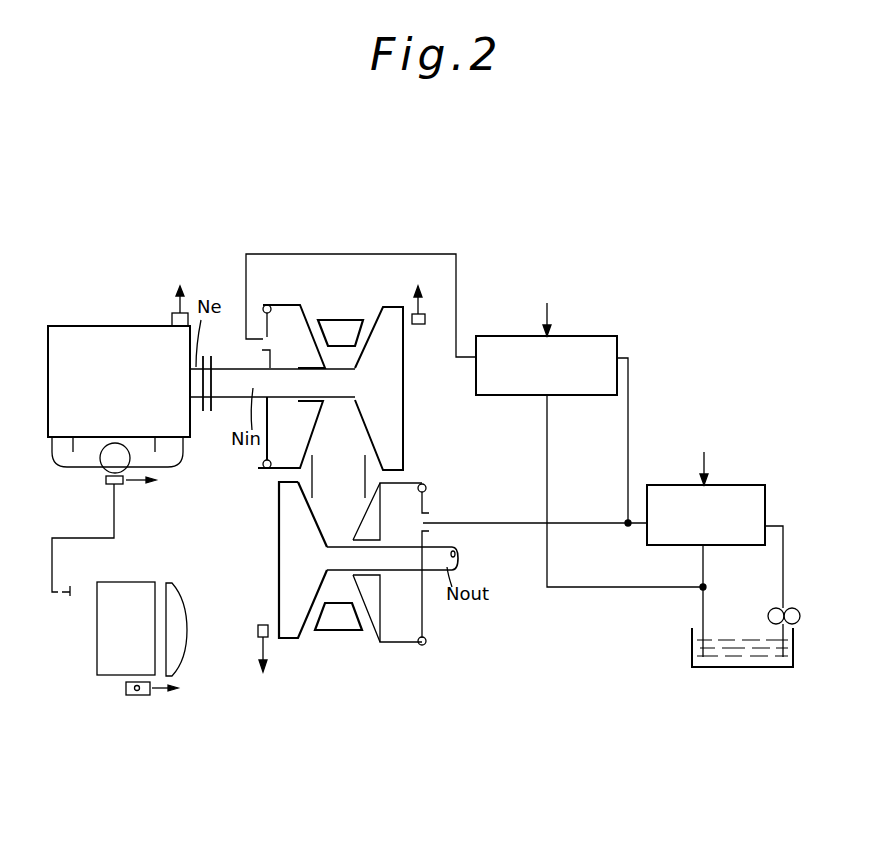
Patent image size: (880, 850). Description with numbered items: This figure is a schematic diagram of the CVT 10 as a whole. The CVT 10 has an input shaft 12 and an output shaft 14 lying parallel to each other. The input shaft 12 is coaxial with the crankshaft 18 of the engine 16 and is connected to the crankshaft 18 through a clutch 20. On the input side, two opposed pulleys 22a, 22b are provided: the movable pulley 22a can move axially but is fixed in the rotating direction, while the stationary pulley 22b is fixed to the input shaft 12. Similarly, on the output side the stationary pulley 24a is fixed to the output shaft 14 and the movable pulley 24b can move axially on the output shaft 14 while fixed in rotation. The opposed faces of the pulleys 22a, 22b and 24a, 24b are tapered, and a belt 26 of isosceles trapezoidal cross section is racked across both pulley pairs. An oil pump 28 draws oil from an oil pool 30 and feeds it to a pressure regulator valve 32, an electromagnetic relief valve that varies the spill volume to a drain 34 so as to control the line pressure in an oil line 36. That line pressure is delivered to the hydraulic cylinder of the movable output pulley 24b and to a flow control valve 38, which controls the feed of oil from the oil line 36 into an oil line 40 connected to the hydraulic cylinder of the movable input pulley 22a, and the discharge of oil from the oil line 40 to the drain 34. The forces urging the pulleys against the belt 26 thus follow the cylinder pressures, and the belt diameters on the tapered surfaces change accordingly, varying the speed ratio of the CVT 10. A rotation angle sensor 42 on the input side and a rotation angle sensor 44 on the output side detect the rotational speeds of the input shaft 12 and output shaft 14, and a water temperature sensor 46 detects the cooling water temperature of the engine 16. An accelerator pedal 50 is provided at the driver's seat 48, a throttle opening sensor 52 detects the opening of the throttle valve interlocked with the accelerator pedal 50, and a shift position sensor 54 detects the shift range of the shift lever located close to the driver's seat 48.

The CVT 10 is at (366, 284).
The input shaft 12 is at (229, 387).
The output shaft 14 is at (430, 567).
The engine 16 is at (93, 335).
The crankshaft 18 is at (201, 400).
The clutch 20 is at (212, 358).
The movable pulley on the input side 22a is at (286, 325).
The stationary pulley on the input side 22b is at (395, 440).
The stationary pulley on the output side 24a is at (288, 627).
The movable pulley on the output side 24b is at (393, 630).
The belt 26 is at (340, 330).
The oil pump 28 is at (770, 612).
The oil pool 30 is at (692, 660).
The pressure regulator valve 32 is at (748, 495).
The drain 34 is at (702, 611).
The oil line 36 is at (630, 455).
The flow control valve 38 is at (584, 337).
The oil line 40 is at (457, 281).
The rotation angle sensor on the input side 42 is at (421, 325).
The rotation angle sensor on the output side 44 is at (257, 630).
The water temperature sensor 46 is at (171, 320).
The driver's seat 48 is at (128, 600).
The accelerator pedal 50 is at (70, 594).
The throttle opening sensor 52 is at (120, 485).
The shift position sensor 54 is at (137, 696).